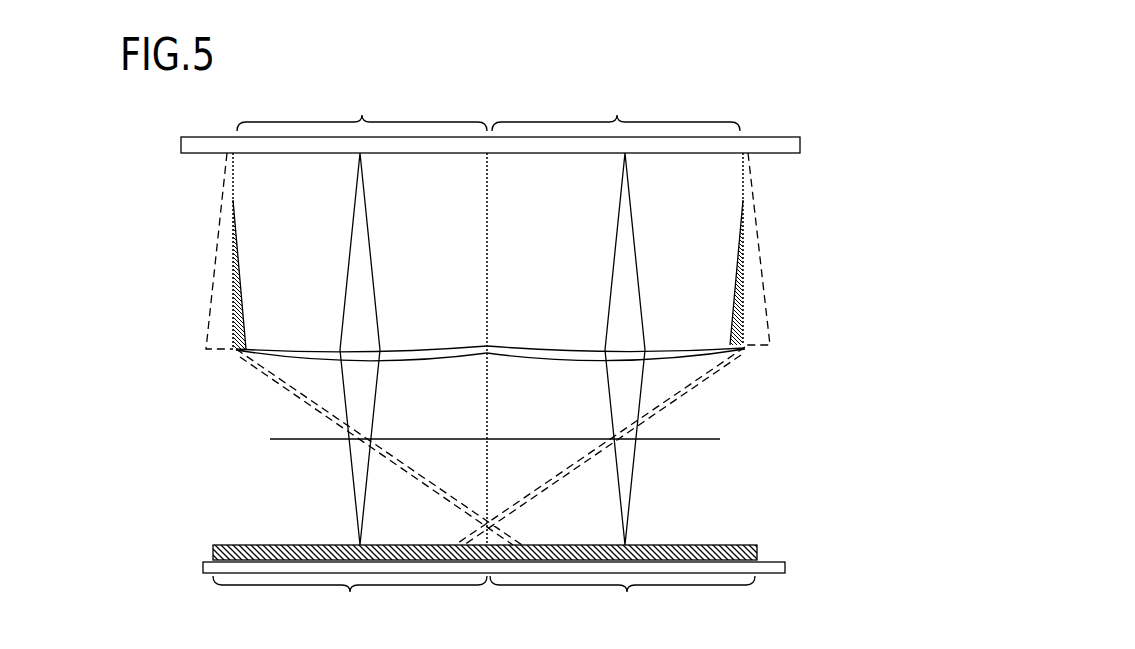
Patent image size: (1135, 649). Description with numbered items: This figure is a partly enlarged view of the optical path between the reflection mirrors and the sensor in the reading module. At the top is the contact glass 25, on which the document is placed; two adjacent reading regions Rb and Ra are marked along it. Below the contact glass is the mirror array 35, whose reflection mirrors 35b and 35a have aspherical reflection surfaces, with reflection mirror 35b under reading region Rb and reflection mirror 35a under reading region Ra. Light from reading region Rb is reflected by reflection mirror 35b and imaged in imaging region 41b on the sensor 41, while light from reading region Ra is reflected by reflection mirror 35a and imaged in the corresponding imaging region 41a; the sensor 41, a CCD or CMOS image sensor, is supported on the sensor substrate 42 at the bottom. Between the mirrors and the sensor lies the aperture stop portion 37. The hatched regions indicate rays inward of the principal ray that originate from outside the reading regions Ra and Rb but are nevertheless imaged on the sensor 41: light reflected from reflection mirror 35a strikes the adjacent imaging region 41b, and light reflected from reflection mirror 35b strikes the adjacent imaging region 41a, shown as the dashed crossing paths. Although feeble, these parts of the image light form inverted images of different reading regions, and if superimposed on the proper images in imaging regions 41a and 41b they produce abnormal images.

The contact glass 25 is at (781, 137).
The mirror array 35 is at (549, 284).
The reflection mirror 35a is at (527, 348).
The reflection mirror 35b is at (441, 348).
The aperture stop portion 37 is at (345, 441).
The sensor 41 is at (742, 545).
The sensor substrate 42 is at (786, 563).
The imaging region 41a is at (622, 600).
The imaging region 41b is at (350, 600).
The reading region Ra is at (616, 107).
The reading region Rb is at (362, 107).